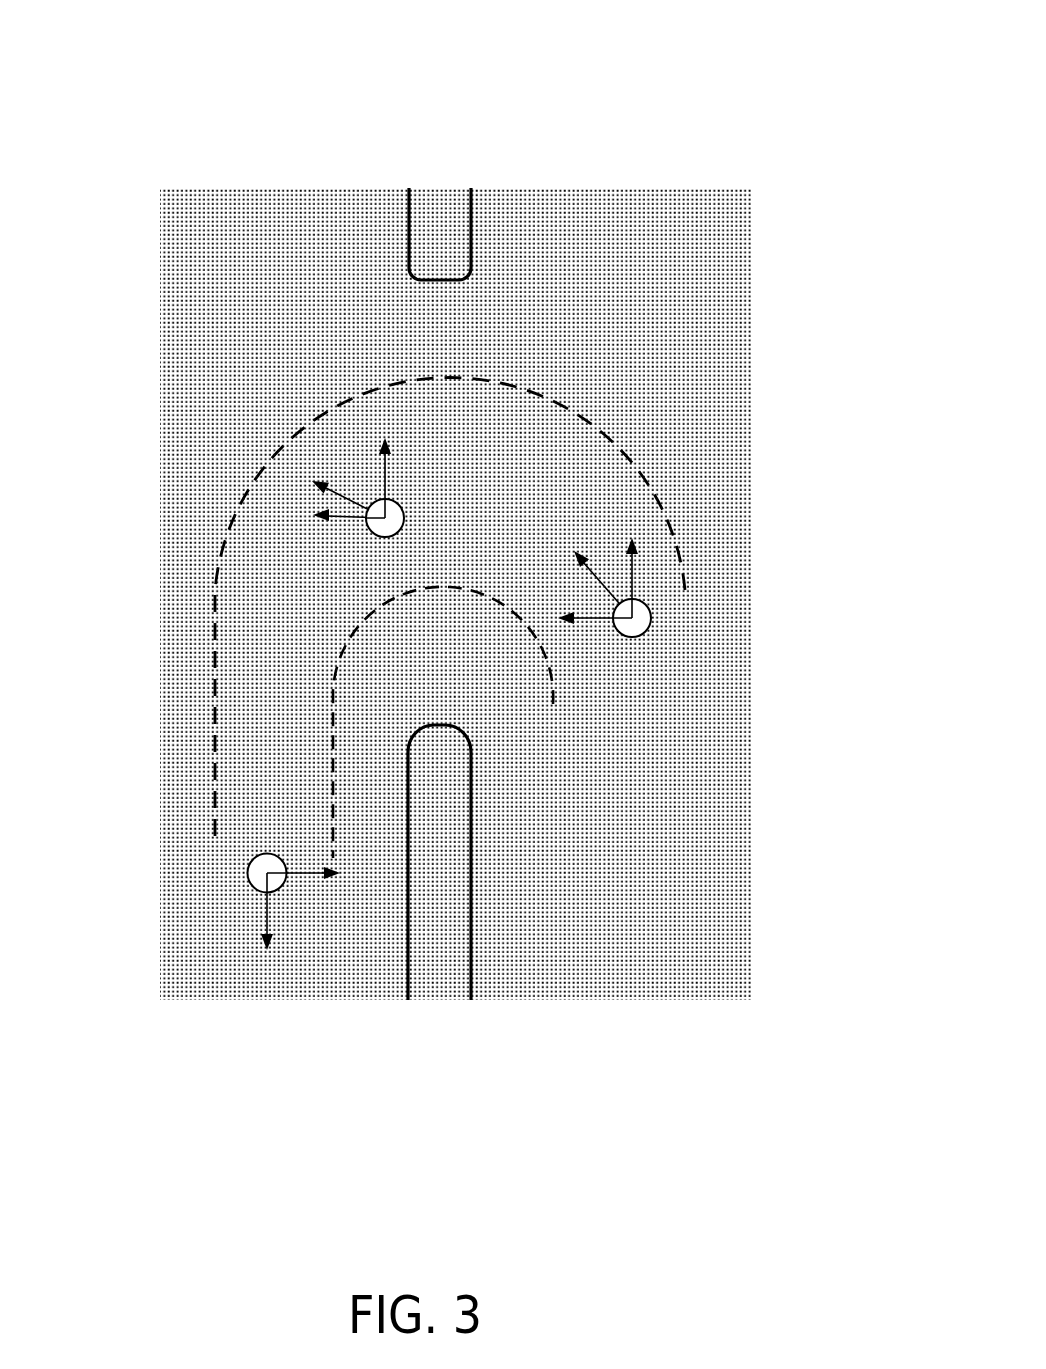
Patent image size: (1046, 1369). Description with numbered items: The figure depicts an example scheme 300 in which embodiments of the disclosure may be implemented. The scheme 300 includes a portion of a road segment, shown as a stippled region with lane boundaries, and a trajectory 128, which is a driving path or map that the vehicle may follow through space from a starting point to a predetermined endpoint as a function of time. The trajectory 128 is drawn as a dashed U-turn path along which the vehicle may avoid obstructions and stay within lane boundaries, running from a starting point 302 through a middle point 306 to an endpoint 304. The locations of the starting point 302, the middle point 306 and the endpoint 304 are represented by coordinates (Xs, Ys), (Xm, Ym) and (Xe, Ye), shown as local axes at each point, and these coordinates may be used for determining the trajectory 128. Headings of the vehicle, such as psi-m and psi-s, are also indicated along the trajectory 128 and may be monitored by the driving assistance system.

The scheme 300 is at (112, 22).
The trajectory 128 is at (623, 499).
The starting point 302 is at (645, 604).
The endpoint 304 is at (250, 881).
The middle point 306 is at (398, 500).